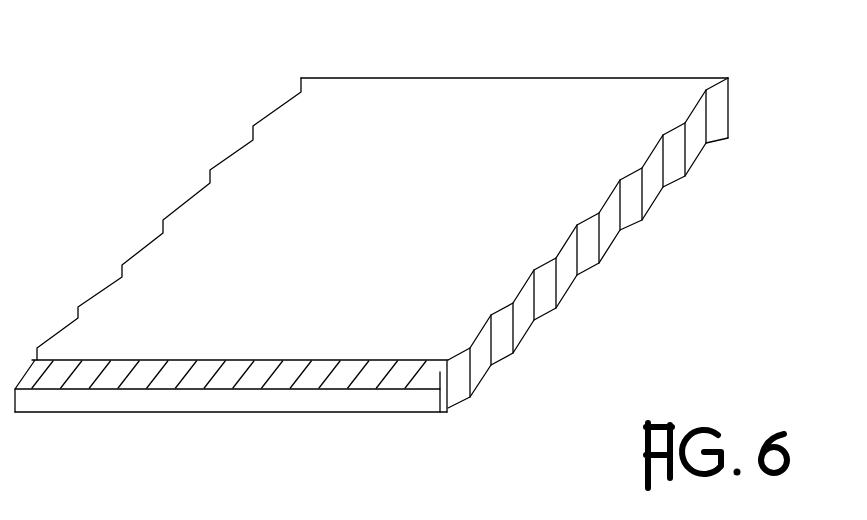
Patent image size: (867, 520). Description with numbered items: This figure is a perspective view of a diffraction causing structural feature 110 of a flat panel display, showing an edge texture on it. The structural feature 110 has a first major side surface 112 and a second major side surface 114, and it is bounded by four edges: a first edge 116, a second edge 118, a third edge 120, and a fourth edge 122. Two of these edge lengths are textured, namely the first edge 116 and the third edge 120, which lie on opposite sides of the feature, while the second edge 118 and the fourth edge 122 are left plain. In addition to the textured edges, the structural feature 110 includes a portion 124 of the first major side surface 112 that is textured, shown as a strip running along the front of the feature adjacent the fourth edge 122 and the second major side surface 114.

The diffraction causing structural feature 110 is at (371, 242).
The first major side surface 112 is at (382, 221).
The second major side surface 114 is at (162, 414).
The first edge 116 is at (148, 242).
The second edge 118 is at (462, 77).
The third edge 120 is at (610, 233).
The fourth edge 122 is at (231, 405).
The textured portion of the first major side surface 124 is at (152, 370).